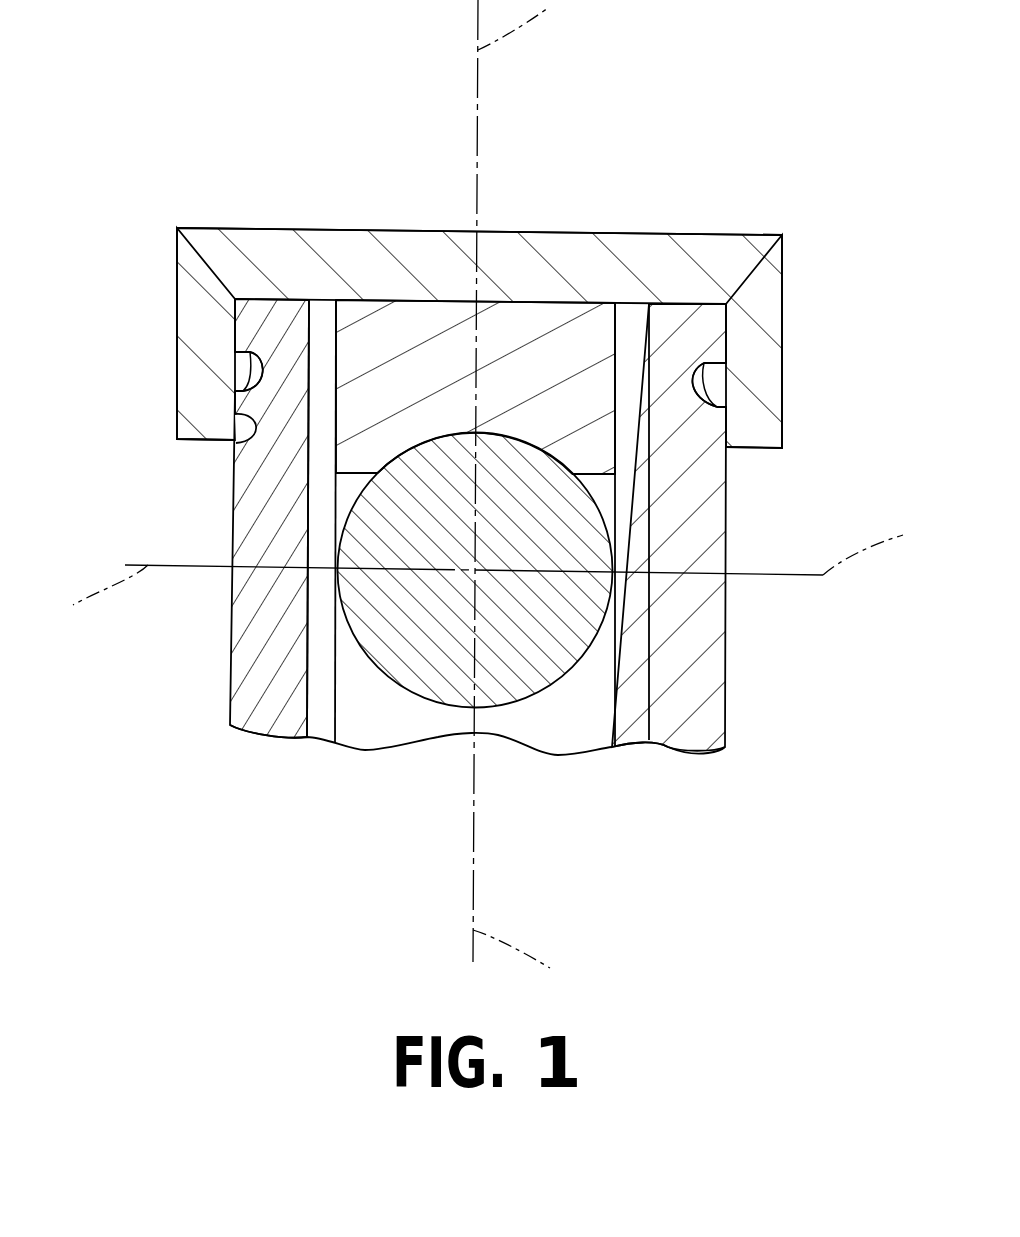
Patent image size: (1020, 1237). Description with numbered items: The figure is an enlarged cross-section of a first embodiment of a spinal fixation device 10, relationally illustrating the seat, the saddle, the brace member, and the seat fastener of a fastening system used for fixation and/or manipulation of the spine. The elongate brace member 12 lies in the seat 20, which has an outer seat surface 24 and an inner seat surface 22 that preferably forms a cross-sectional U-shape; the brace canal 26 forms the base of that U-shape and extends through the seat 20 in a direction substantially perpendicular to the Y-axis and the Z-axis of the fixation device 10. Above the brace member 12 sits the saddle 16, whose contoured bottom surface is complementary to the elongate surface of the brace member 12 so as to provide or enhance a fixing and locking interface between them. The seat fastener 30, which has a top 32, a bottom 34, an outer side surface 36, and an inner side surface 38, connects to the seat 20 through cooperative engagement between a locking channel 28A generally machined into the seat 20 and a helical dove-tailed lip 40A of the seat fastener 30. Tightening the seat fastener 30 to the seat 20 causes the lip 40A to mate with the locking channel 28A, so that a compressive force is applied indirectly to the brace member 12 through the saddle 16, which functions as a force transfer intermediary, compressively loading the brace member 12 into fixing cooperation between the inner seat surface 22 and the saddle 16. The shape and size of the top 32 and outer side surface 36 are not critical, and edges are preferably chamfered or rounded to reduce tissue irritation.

The spinal fixation device 10 is at (272, 832).
The elongate brace member 12 is at (530, 698).
The saddle 16 is at (512, 323).
The seat 20 is at (752, 676).
The inner seat surface 22 is at (608, 502).
The outer seat surface 24 is at (232, 588).
The brace canal 26 is at (357, 480).
The locking channel 28A is at (247, 354).
The seat fastener 30 is at (630, 212).
The top 32 is at (419, 230).
The bottom 34 is at (732, 418).
The outer side surface 36 is at (177, 302).
The inner side surface 38 is at (237, 452).
The helical dove-tailed lip 40A is at (245, 368).